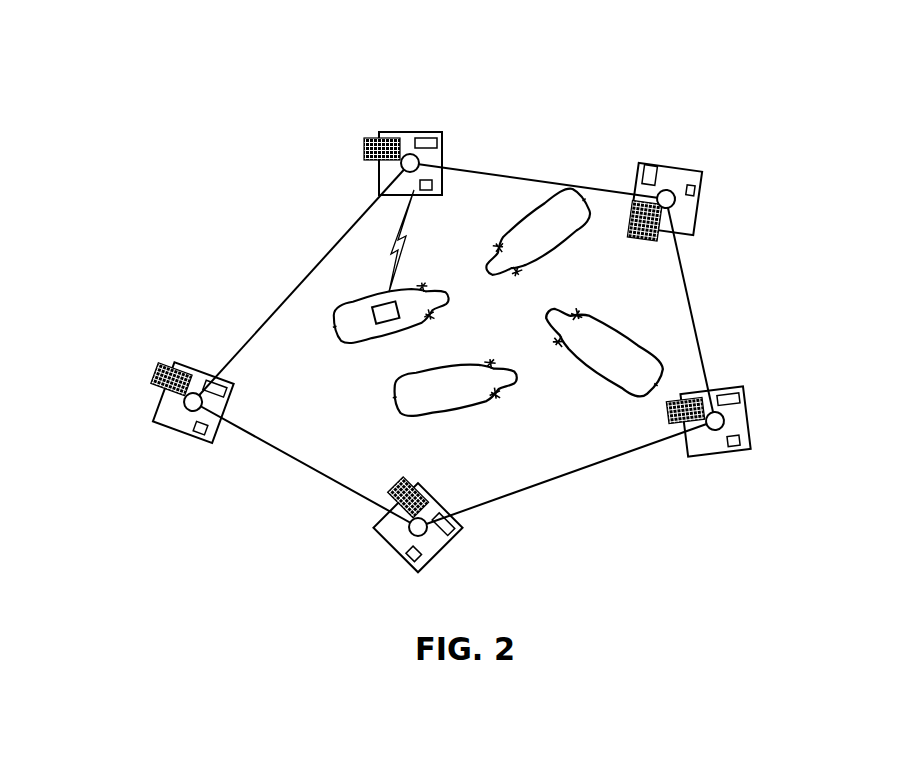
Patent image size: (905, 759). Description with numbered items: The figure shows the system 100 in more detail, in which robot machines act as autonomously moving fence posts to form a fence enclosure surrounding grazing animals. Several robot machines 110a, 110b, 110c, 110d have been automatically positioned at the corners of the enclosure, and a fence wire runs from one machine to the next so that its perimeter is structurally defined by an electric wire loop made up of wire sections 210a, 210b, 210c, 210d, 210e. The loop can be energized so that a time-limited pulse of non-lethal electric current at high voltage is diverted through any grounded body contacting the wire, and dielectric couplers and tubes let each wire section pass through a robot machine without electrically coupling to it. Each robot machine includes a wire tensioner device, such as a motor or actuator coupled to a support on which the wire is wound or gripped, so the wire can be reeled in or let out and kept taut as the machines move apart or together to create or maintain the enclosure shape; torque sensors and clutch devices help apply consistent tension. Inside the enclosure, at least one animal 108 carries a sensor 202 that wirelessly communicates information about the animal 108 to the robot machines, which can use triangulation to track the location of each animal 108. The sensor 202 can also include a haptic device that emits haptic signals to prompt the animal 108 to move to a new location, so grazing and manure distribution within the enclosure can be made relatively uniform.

The system 100 is at (204, 84).
The robot machine 110a is at (385, 540).
The robot machine 110b is at (385, 132).
The robot machine 110c is at (683, 165).
The robot machine 110d is at (720, 457).
The animal 108 is at (380, 293).
The sensor 202 is at (322, 268).
The wire section 210a is at (362, 215).
The wire section 210b is at (480, 173).
The wire section 210c is at (684, 272).
The wire section 210d is at (628, 455).
The wire section 210e is at (268, 450).